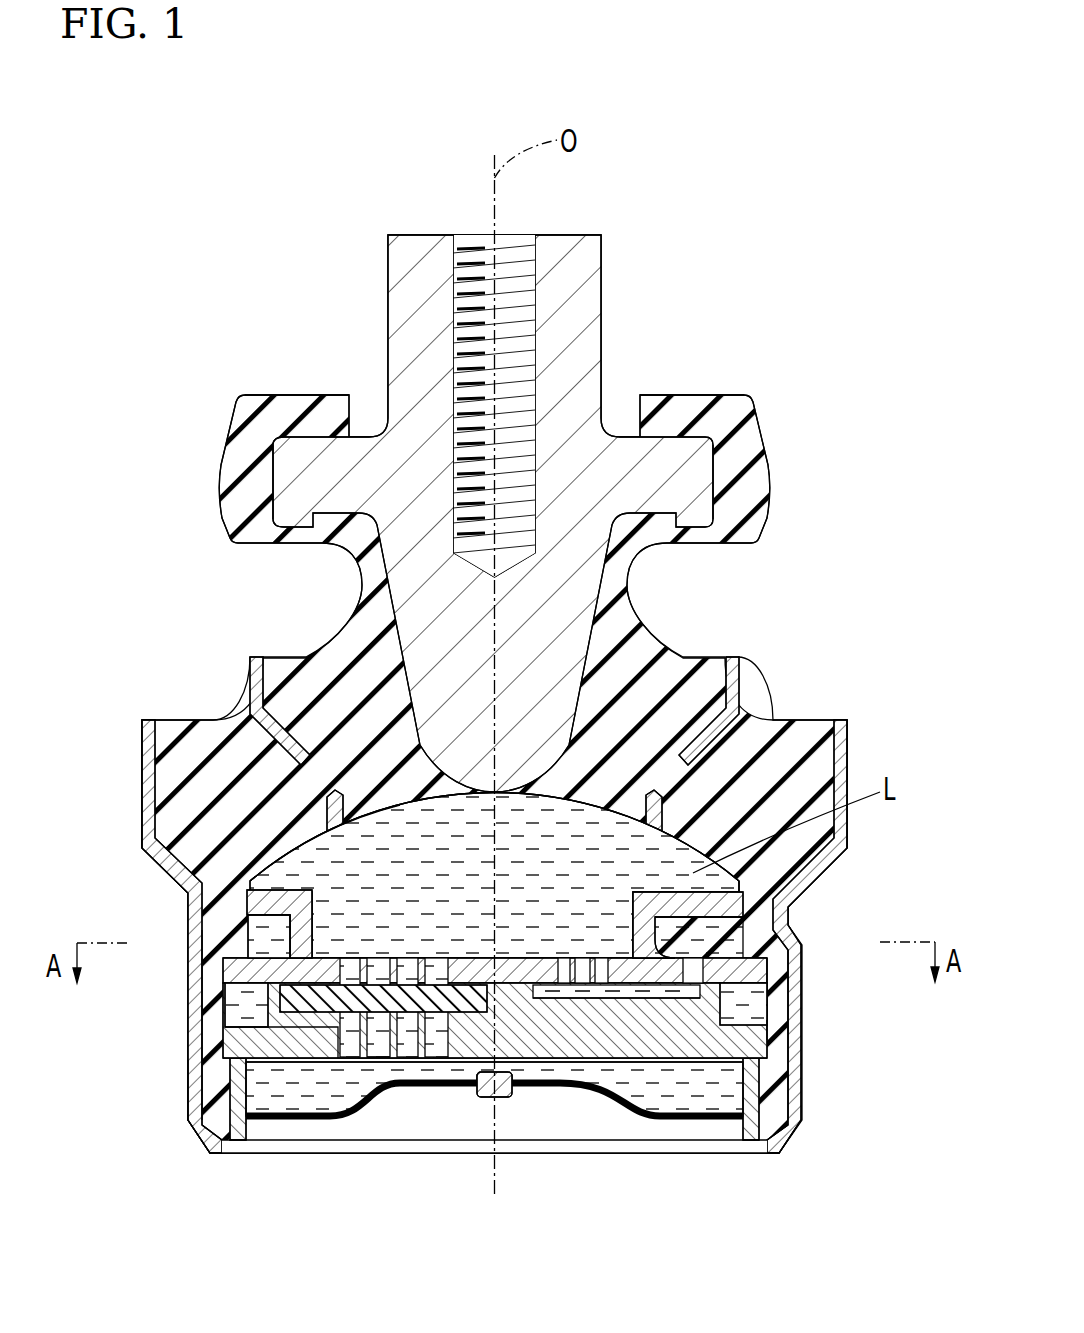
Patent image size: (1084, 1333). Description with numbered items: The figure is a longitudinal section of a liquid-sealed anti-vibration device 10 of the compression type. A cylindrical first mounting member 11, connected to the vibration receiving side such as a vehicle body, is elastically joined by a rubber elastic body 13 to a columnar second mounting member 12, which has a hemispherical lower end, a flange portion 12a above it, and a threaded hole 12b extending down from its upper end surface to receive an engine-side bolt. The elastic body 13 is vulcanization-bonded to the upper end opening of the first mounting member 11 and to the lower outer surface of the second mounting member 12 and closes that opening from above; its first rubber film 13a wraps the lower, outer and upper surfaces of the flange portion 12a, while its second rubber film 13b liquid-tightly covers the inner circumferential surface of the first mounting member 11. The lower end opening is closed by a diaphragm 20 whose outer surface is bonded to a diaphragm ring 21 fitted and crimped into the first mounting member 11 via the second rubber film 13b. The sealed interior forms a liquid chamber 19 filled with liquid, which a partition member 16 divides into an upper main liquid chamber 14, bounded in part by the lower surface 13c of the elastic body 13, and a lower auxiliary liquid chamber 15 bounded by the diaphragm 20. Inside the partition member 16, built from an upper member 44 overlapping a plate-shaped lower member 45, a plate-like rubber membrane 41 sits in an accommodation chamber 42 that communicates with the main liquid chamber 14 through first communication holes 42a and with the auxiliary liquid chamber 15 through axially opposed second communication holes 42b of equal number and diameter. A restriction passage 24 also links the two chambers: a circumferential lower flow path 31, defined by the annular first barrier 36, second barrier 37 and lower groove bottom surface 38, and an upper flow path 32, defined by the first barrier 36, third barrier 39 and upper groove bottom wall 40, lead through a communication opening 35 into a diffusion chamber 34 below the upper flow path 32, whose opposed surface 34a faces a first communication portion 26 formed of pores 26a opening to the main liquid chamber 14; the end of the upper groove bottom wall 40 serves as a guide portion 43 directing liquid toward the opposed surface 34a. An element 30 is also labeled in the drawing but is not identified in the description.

The anti-vibration device 10 is at (222, 193).
The first mounting member 11 is at (148, 863).
The second mounting member 12 is at (603, 232).
The flange portion 12a is at (707, 456).
The threaded hole 12b is at (472, 245).
The elastic body 13 is at (817, 711).
The first rubber film 13a is at (741, 400).
The second rubber film 13b is at (782, 1093).
The lower surface 13c is at (270, 878).
The main liquid chamber 14 is at (579, 827).
The auxiliary liquid chamber 15 is at (712, 1107).
The partition member 16 is at (912, 975).
The liquid chamber 19 is at (400, 816).
The diaphragm 20 is at (458, 1088).
The diaphragm ring 21 is at (228, 1120).
The restriction passage 24 is at (260, 928).
The first communication portion 26 is at (645, 997).
The pores 26a is at (583, 960).
The partition body 30 is at (186, 1082).
The lower flow path 31 is at (762, 1003).
The upper flow path 32 is at (745, 937).
The diffusion chamber 34 is at (700, 1040).
The opposed surface 34a is at (585, 997).
The communication opening 35 is at (693, 962).
The first barrier 36 is at (223, 968).
The second barrier 37 is at (235, 1020).
The lower groove bottom surface 38 is at (252, 995).
The third barrier 39 is at (257, 902).
The upper groove bottom wall 40 is at (270, 935).
The membrane 41 is at (315, 1020).
The accommodation chamber 42 is at (474, 1008).
The first communication holes 42a is at (350, 966).
The second communication holes 42b is at (380, 1058).
The guide portion 43 is at (740, 890).
The upper member 44 is at (772, 967).
The lower member 45 is at (772, 1030).